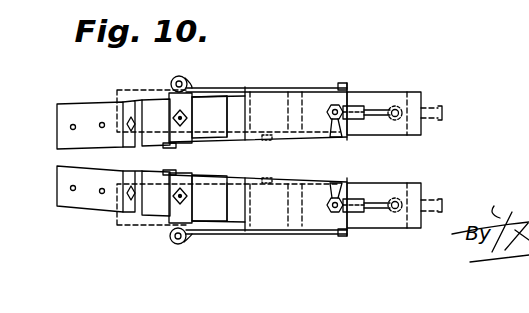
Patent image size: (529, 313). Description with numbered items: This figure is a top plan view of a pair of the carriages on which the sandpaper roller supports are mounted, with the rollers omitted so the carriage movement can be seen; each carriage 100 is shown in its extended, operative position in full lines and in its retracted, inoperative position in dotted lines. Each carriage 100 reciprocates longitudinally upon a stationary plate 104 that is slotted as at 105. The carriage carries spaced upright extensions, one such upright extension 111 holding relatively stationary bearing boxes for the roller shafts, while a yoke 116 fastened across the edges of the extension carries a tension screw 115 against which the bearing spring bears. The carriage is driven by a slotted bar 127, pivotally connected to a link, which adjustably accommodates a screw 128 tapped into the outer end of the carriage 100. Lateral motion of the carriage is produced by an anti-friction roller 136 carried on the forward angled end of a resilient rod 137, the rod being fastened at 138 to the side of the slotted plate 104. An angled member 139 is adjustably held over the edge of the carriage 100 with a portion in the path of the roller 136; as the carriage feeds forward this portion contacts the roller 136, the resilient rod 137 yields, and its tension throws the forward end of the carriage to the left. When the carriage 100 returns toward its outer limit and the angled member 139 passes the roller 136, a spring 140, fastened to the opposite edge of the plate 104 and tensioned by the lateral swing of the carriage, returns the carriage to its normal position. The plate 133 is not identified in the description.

The carriage 100 is at (212, 107).
The plate 104 is at (414, 192).
The slot 105 is at (382, 108).
The upright extension 111 is at (250, 100).
The tension screw 115 is at (131, 191).
The yoke 116 is at (127, 108).
The bar 127 is at (365, 199).
The screw 128 is at (338, 196).
The end plate 133 is at (60, 185).
The anti-friction roller 136 is at (186, 79).
The resilient rod 137 is at (243, 118).
The fastening point 138 is at (343, 85).
The angled member 139 is at (175, 100).
The spring 140 is at (173, 173).